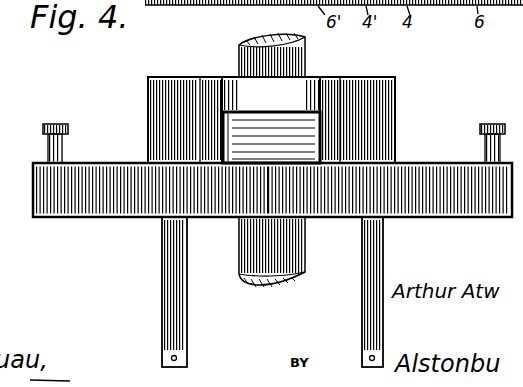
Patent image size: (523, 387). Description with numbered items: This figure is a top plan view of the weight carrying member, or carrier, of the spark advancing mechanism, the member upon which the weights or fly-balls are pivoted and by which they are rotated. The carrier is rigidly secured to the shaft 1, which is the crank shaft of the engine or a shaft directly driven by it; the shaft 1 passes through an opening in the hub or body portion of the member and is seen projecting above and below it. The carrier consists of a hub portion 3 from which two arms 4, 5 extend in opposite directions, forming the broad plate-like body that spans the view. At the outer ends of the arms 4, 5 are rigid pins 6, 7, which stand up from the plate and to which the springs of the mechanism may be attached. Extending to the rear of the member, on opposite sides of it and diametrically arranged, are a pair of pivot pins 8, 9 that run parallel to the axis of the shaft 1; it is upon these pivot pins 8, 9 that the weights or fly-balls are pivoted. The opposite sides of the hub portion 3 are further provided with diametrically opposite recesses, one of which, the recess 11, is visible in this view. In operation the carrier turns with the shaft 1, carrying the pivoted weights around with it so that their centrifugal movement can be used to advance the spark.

The shaft 1 is at (294, 254).
The hub portion 3 is at (226, 82).
The arm 4 is at (444, 172).
The arm 5 is at (108, 172).
The rigid pin 6 is at (498, 124).
The rigid pin 7 is at (58, 124).
The pivot pin 8 is at (366, 294).
The pivot pin 9 is at (170, 292).
The recess 11 is at (284, 132).